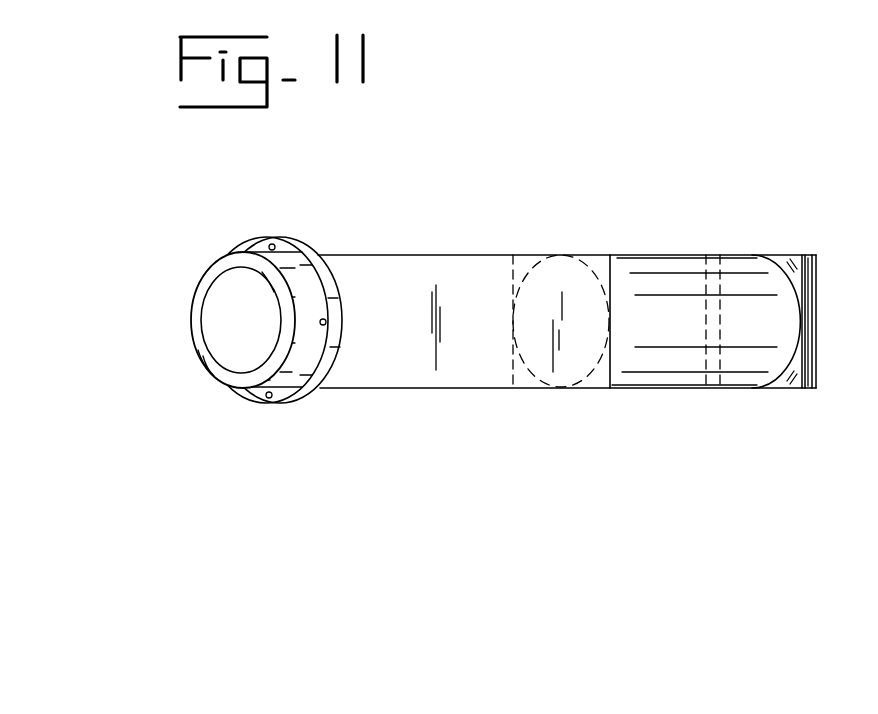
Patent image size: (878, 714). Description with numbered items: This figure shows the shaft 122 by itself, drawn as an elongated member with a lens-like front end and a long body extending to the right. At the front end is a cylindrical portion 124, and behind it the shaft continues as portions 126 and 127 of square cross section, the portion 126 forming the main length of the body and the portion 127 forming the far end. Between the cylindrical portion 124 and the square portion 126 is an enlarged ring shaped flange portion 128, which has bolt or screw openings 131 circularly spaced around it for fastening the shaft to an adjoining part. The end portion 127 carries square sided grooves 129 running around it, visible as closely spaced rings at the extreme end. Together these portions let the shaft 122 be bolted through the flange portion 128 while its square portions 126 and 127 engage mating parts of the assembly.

The shaft 122 is at (483, 230).
The cylindrical portion 124 is at (290, 358).
The portion of square cross section 126 is at (422, 388).
The portion of square cross section 127 is at (815, 388).
The ring shaped flange portion 128 is at (325, 363).
The square sided grooves 129 is at (815, 360).
The bolt or screw openings 131 is at (283, 240).